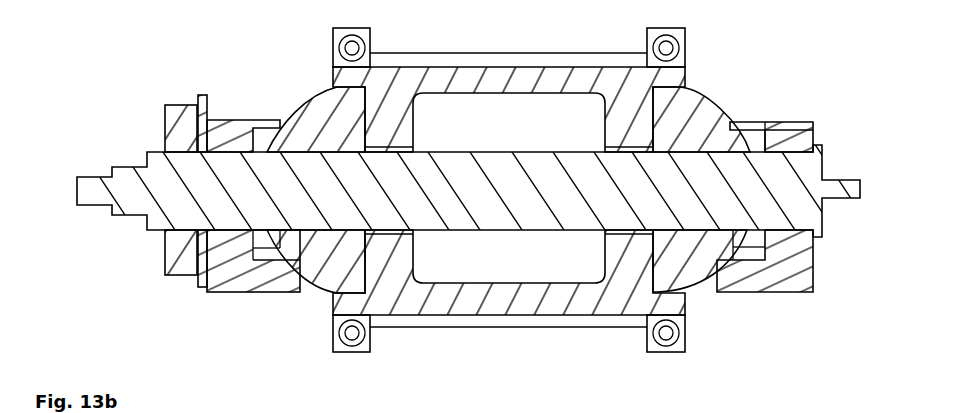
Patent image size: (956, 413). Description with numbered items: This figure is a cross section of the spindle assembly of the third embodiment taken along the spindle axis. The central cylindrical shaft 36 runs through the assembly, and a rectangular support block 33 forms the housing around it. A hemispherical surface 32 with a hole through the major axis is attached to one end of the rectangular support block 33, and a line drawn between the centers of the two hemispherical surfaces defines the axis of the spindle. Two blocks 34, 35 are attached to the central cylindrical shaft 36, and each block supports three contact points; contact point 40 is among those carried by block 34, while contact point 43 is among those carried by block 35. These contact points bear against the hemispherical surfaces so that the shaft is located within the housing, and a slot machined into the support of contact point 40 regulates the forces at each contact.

The hemispherical surface 32 is at (694, 130).
The rectangular support block 33 is at (634, 100).
The block 34 is at (797, 270).
The block 35 is at (235, 144).
The central cylindrical shaft 36 is at (123, 178).
The contact point 40 is at (728, 269).
The contact point 43 is at (288, 270).